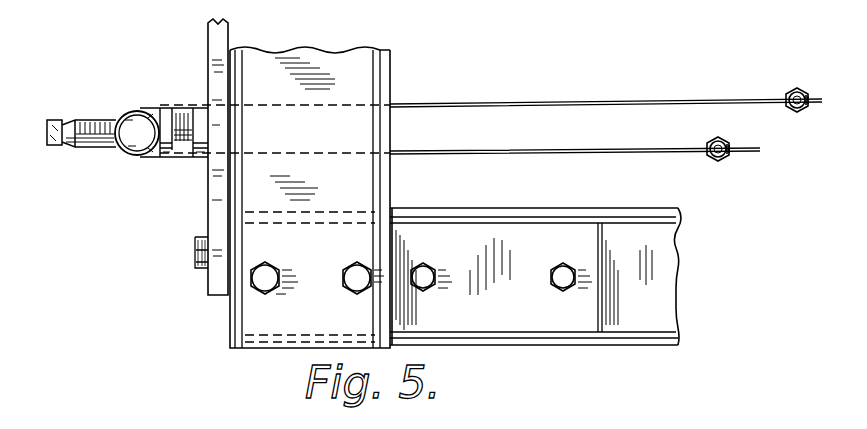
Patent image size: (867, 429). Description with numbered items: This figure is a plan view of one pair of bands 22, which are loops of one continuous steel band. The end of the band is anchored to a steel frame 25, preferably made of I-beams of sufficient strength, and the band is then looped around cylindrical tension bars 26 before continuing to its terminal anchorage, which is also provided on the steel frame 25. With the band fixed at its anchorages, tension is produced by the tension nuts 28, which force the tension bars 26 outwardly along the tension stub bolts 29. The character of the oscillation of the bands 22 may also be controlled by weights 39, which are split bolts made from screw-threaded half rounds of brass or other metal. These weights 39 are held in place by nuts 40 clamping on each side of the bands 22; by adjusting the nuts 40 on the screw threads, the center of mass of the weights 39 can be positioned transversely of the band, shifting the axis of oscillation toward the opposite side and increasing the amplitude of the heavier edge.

The bands 22 is at (573, 112).
The steel frame 25 is at (668, 250).
The tension bars 26 is at (138, 150).
The tension nuts 28 is at (165, 108).
The tension stub bolts 29 is at (88, 149).
The weights 39 is at (724, 158).
The nuts 40 is at (726, 140).